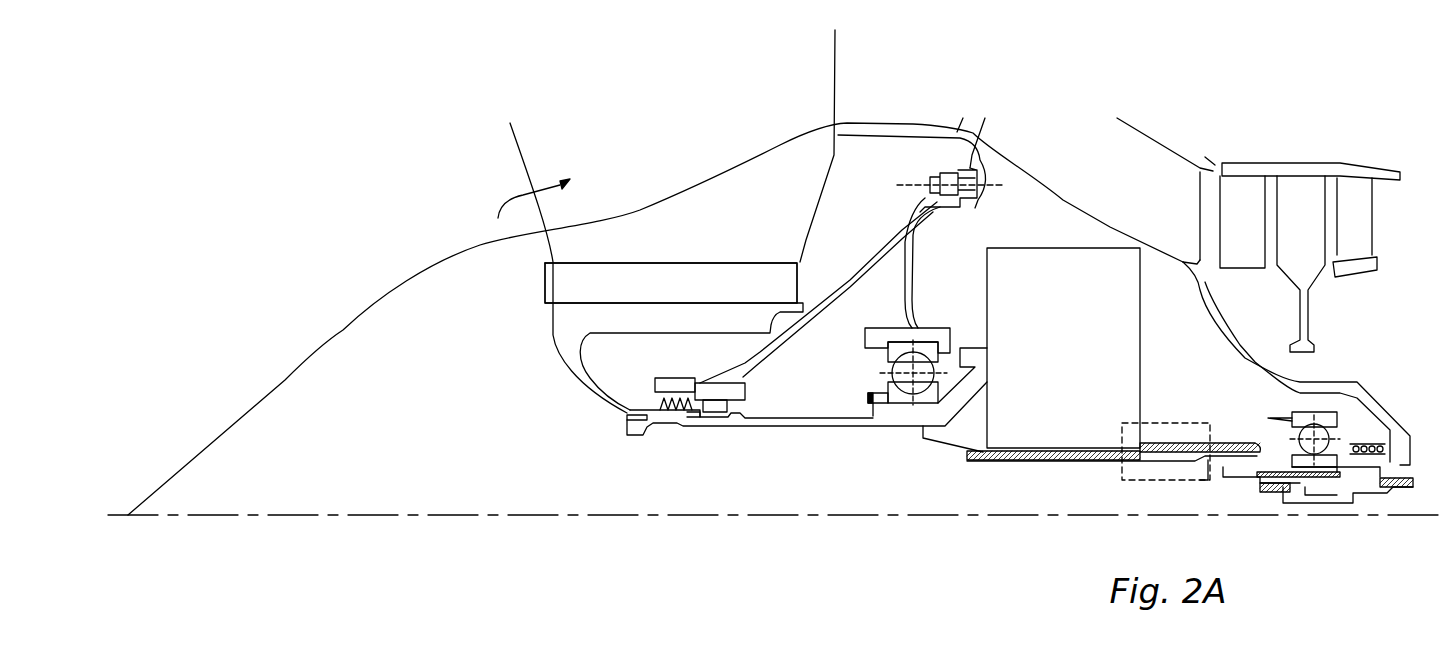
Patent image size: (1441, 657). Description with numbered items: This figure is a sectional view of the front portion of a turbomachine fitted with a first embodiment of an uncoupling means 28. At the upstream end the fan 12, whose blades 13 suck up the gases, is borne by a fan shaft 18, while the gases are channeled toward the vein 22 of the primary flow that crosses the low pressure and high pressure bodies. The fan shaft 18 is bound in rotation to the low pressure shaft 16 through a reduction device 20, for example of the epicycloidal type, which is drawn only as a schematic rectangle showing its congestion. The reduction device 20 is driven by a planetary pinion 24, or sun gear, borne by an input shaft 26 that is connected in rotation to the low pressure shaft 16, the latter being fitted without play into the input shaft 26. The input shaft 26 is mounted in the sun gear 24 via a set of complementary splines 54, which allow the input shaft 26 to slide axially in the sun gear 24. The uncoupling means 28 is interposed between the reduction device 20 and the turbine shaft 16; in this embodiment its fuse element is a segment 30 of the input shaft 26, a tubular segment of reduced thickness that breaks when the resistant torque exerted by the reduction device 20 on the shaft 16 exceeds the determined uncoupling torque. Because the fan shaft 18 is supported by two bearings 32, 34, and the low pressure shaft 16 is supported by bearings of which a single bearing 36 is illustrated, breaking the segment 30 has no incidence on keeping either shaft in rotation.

The fan 12 is at (505, 240).
The blades 13 is at (566, 246).
The low pressure shaft 16 is at (1280, 472).
The fan shaft 18 is at (777, 424).
The reduction device 20 is at (1039, 348).
The vein of primary flow 22 is at (1208, 208).
The planetary pinion 24 is at (998, 452).
The input shaft 26 is at (1132, 461).
The uncoupling means 28 is at (1203, 482).
The fuse segment of the input shaft 30 is at (1157, 455).
The bearing 32 is at (717, 403).
The bearing 34 is at (897, 398).
The bearing 36 is at (1337, 435).
The set of splines 54 is at (1057, 461).